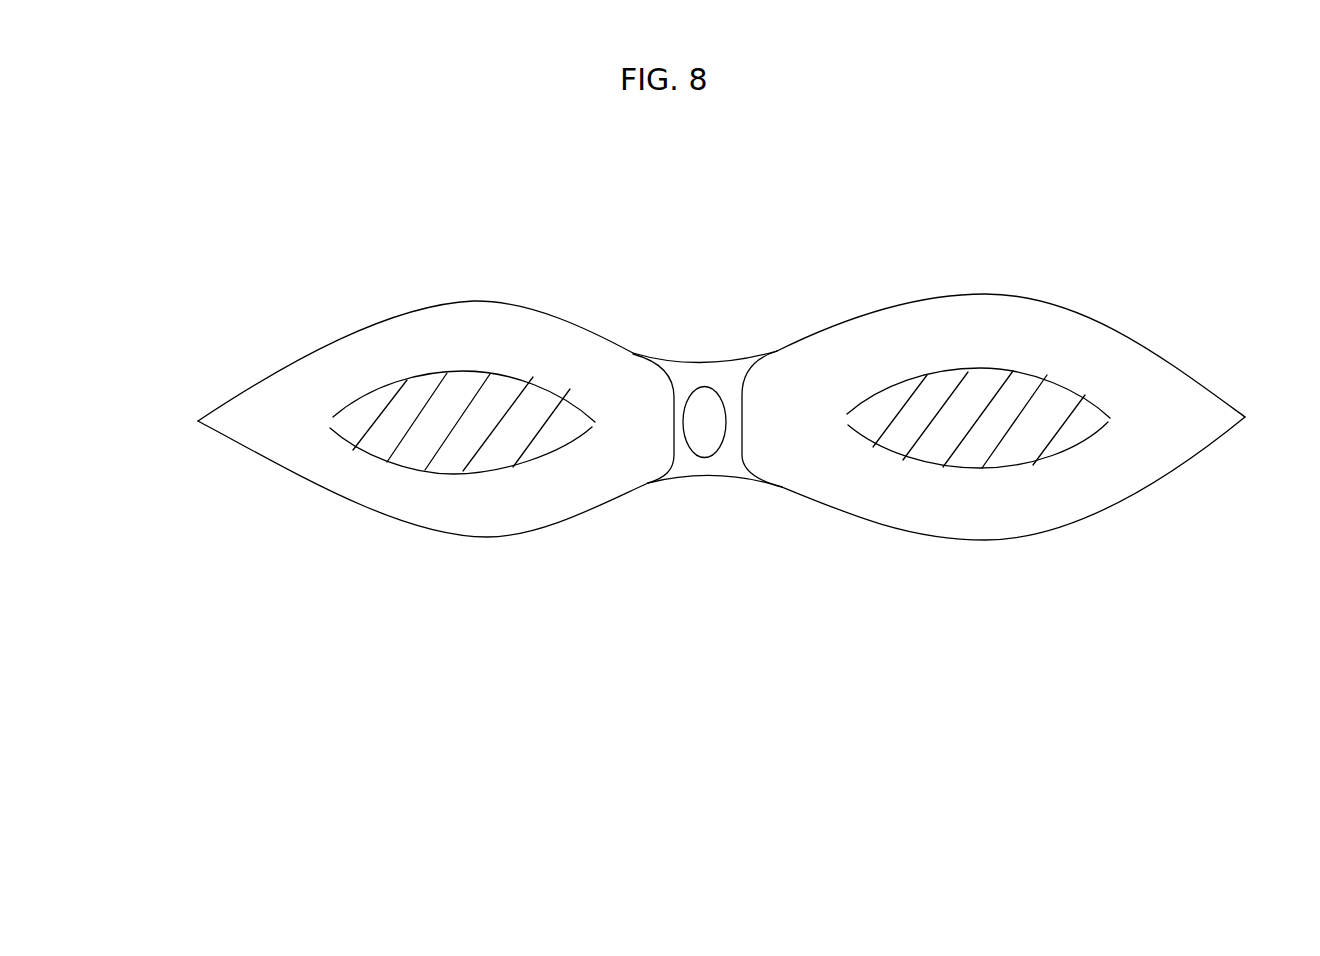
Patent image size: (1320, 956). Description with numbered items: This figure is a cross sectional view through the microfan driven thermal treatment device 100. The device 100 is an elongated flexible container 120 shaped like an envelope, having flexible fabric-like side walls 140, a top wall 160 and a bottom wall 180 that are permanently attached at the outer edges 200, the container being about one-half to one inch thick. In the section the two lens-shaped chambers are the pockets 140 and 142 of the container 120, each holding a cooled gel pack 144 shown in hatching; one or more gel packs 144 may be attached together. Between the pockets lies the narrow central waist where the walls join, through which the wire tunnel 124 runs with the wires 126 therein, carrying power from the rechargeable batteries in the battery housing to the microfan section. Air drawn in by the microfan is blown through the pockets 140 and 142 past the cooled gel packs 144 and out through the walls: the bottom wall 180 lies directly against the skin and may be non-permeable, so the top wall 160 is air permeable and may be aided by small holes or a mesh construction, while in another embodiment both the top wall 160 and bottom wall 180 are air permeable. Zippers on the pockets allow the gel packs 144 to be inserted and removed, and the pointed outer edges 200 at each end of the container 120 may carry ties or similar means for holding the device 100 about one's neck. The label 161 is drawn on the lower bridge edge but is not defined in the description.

The thermal treatment device 100 is at (1043, 224).
The elongated flexible container 120 is at (1136, 283).
The wire tunnel 124 is at (728, 383).
The wires 126 is at (705, 430).
The side walls / pockets 140 is at (298, 325).
The gel pack pocket 142 is at (273, 423).
The gel packs 144 is at (528, 427).
The top wall 160 is at (544, 313).
The lower bridge edge 161 is at (733, 508).
The bottom wall 180 is at (405, 525).
The outer edges 200 is at (198, 422).